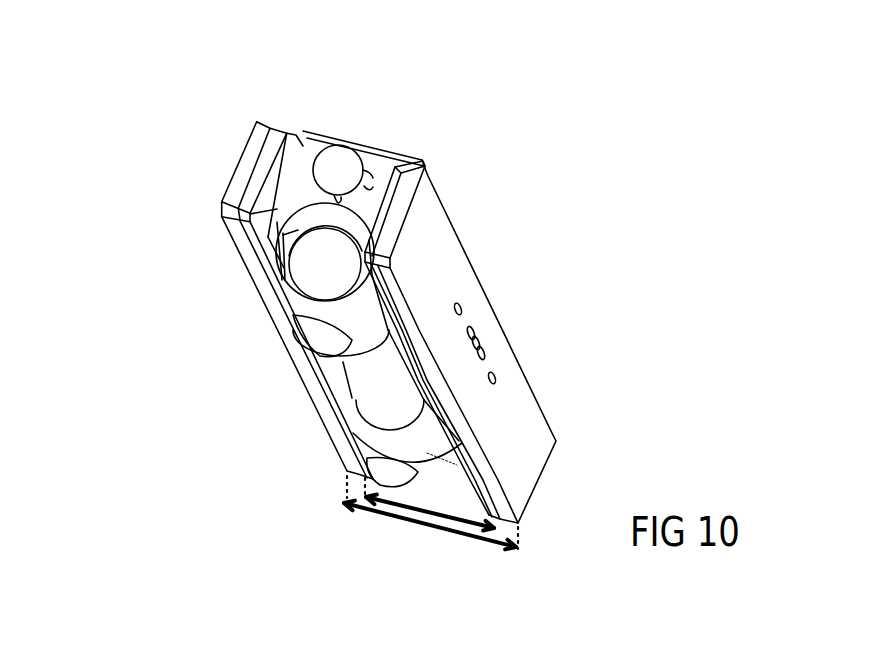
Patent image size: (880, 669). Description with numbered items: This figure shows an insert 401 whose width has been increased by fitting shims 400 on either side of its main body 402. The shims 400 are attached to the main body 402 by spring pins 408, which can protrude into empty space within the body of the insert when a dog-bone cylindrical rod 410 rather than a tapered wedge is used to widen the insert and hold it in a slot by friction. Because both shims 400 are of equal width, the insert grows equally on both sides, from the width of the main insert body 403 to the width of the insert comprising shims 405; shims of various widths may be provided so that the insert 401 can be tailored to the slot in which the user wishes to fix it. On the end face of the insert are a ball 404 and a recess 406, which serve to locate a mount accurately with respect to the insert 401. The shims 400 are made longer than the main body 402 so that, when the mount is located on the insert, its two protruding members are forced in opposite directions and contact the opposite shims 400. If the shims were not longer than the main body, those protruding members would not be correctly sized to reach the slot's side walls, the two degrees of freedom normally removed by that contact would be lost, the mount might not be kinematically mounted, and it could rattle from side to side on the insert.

The shims 400 is at (252, 172).
The insert 401 is at (267, 103).
The main body 402 is at (342, 161).
The width of the main insert body 403 is at (407, 517).
The ball 404 is at (343, 160).
The width of the insert comprising shims 405 is at (473, 540).
The recess 406 is at (368, 190).
The spring pins 408 is at (460, 305).
The dog-bone cylindrical rod 410 is at (377, 377).